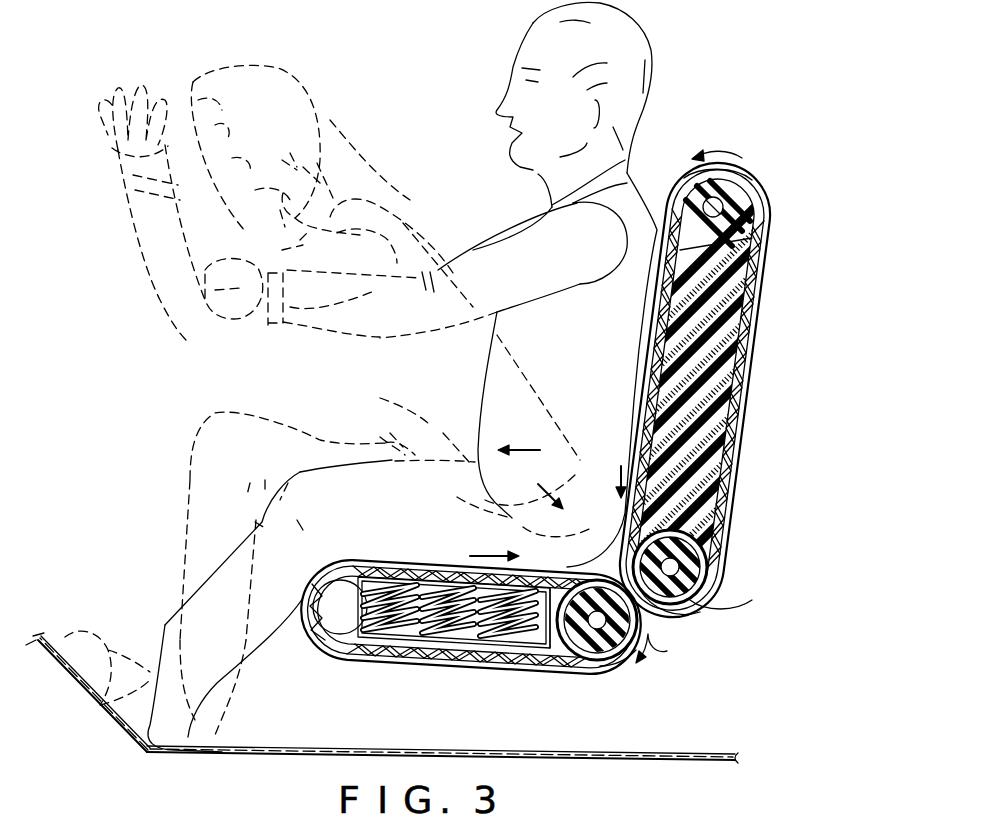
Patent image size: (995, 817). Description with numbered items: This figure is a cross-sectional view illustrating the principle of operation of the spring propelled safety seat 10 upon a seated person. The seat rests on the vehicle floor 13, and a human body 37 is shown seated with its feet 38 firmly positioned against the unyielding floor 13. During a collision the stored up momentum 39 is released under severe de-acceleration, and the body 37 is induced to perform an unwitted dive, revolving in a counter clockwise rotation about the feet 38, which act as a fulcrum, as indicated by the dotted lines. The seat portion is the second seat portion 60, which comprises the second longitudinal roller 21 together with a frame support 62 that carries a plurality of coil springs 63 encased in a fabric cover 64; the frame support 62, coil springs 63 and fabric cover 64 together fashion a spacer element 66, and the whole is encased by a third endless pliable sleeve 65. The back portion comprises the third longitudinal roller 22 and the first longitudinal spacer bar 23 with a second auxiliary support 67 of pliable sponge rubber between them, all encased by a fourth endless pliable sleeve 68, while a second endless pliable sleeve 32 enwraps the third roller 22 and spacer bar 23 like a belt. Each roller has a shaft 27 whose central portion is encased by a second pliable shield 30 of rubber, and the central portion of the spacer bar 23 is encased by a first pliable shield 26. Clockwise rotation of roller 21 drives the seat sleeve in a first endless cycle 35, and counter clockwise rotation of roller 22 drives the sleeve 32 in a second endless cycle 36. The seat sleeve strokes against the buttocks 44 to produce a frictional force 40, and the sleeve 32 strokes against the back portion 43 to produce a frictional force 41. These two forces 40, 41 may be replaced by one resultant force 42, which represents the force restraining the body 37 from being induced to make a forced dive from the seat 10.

The spring propeller safety seat 10 is at (361, 665).
The vehicle floor 13 is at (217, 753).
The second longitudinal roller 21 is at (590, 678).
The third longitudinal roller 22 is at (680, 550).
The first longitudinal spacer bar 23 is at (765, 197).
The first pliable shield 26 is at (742, 235).
The shaft 27 is at (687, 600).
The second pliable shield 30 is at (697, 577).
The second endless pliable sleeve 32 is at (750, 333).
The first endless cycle 35 is at (668, 650).
The second endless cycle 36 is at (731, 144).
The human body 37 is at (633, 130).
The feet 38 is at (62, 637).
The stored up momentum 39 is at (533, 450).
The force 40 is at (502, 555).
The force 41 is at (620, 478).
The resultant force 42 is at (548, 490).
The back portion 43 is at (657, 313).
The buttocks 44 is at (438, 575).
The second seat portion 60 is at (417, 666).
The frame support 62 is at (323, 648).
The coil springs 63 is at (522, 670).
The fabric cover 64 is at (348, 658).
The third endless pliable sleeve 65 is at (433, 668).
The spacer element 66 is at (460, 662).
The second auxiliary support 67 is at (713, 373).
The fourth endless pliable sleeve 68 is at (737, 447).